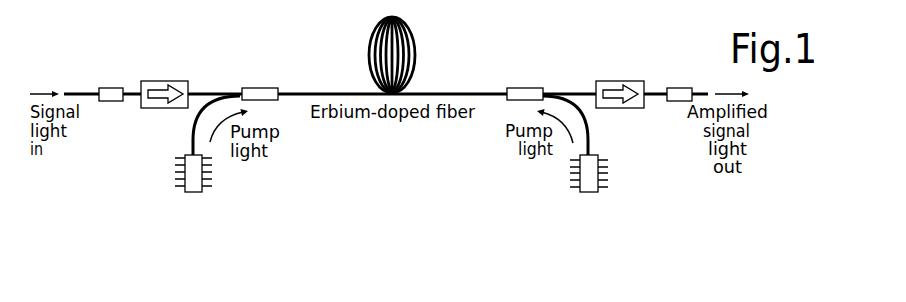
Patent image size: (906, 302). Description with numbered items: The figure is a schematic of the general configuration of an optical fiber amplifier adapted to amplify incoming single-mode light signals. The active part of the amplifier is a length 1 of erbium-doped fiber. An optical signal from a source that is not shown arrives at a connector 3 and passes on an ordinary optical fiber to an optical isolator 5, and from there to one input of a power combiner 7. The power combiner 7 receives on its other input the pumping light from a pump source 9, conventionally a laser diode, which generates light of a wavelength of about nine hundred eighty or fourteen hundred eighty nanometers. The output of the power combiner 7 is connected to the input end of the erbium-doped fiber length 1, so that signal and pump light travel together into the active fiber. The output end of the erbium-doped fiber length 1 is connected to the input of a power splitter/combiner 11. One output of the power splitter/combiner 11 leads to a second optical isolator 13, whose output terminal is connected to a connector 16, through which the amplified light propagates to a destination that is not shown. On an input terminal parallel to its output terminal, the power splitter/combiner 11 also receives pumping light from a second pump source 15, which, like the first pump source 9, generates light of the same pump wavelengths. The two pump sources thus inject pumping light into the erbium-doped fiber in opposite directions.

The erbium-doped fiber length 1 is at (374, 30).
The connector 3 is at (110, 102).
The optical isolator 5 is at (162, 108).
The power combiner 7 is at (273, 101).
The pump source 9 is at (203, 190).
The power splitter/combiner 11 is at (513, 100).
The optical isolator 13 is at (614, 107).
The second pump source 15 is at (598, 155).
The connector 16 is at (678, 101).